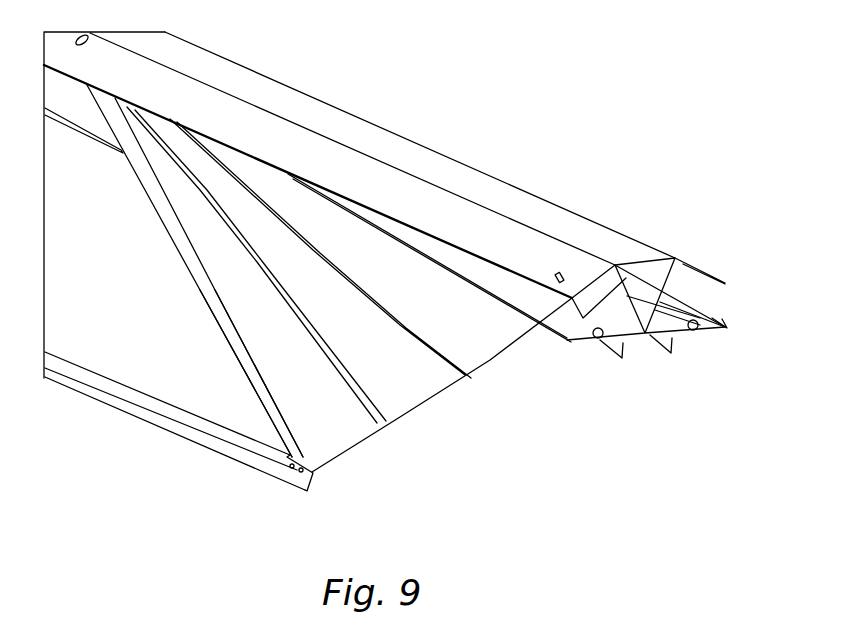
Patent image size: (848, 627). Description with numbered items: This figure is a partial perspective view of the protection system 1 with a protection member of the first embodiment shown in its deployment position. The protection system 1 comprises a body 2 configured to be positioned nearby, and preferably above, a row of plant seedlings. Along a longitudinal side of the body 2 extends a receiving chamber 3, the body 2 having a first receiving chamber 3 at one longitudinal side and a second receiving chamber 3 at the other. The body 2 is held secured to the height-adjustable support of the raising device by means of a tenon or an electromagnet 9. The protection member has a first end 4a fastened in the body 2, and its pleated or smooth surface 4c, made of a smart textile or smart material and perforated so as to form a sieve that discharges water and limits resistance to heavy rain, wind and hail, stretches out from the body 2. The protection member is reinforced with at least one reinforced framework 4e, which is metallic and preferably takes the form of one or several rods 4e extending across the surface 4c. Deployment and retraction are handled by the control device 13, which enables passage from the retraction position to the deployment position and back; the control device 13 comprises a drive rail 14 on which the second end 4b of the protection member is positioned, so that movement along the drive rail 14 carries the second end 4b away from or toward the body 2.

The protection system 1 is at (425, 272).
The body 2 is at (650, 257).
The receiving chamber 3 is at (578, 320).
The first end 4a is at (490, 250).
The second end 4b is at (320, 430).
The surface 4c is at (412, 349).
The reinforced framework 4e is at (380, 400).
The tenon or electromagnet 9 is at (232, 327).
The control device 13 is at (476, 425).
The drive rail 14 is at (255, 464).